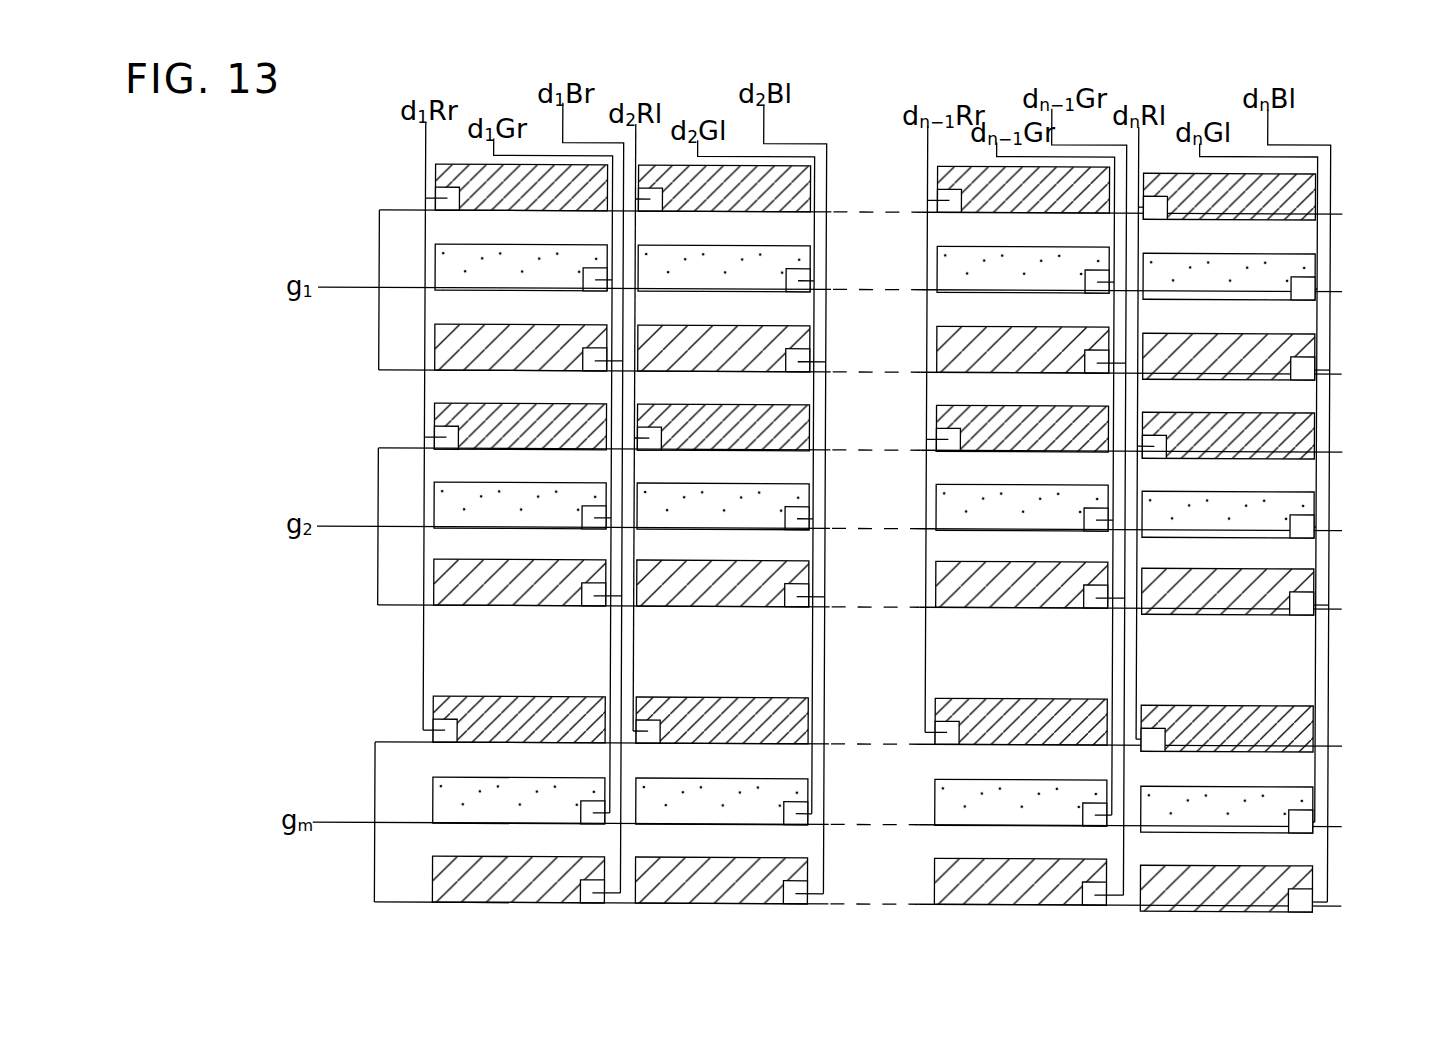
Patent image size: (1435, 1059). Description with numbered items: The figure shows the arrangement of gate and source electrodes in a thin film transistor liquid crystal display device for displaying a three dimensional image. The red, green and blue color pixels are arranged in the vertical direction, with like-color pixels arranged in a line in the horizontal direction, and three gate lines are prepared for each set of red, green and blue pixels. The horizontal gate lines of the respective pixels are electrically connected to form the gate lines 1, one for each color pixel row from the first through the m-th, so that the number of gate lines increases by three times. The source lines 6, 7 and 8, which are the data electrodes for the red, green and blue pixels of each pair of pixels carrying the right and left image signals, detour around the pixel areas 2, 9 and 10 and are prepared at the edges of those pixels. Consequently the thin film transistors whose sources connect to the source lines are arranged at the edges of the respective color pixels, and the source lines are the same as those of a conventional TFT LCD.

The gate lines 1 is at (274, 812).
The pixel area 2 is at (1310, 705).
The source line 6 is at (635, 93).
The source line 7 is at (692, 112).
The source line 8 is at (803, 92).
The pixel area 9 is at (1303, 803).
The pixel area 10 is at (1282, 378).